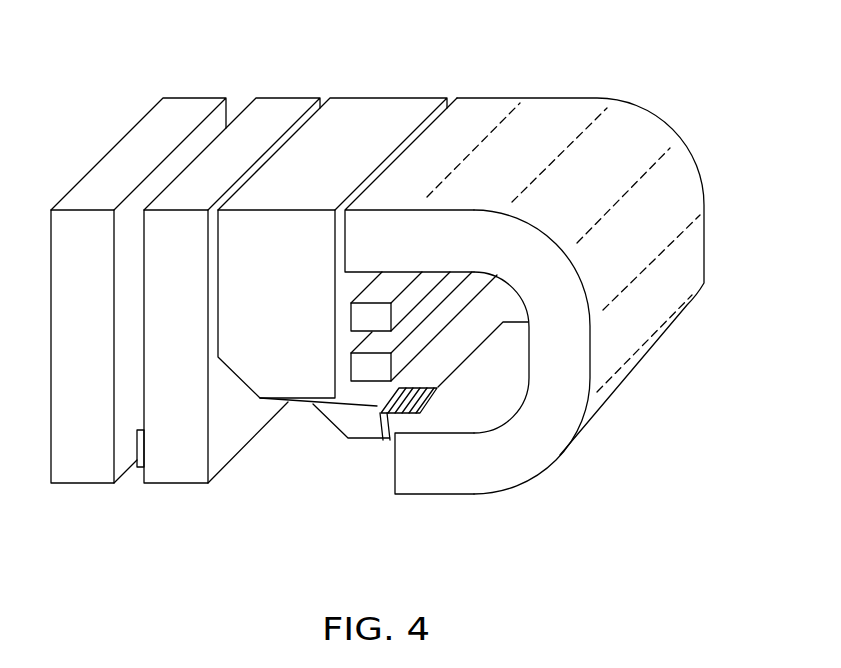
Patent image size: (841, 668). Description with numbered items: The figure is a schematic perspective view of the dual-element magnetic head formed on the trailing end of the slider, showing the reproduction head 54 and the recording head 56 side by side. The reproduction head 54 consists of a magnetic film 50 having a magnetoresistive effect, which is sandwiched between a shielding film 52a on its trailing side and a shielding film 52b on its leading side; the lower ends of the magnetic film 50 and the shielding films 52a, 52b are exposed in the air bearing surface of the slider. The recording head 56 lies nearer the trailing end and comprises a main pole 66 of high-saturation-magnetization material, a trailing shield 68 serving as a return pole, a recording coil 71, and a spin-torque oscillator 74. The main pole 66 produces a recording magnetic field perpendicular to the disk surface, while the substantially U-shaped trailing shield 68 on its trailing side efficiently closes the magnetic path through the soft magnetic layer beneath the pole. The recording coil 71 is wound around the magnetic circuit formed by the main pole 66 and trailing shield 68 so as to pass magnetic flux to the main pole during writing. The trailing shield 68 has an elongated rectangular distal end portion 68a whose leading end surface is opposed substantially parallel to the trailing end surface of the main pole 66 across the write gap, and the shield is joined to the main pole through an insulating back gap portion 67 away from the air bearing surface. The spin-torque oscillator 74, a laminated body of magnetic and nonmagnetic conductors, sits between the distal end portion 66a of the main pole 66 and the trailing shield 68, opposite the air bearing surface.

The magnetic film 50 is at (136, 445).
The shielding film 52a is at (173, 484).
The shielding film 52b is at (73, 484).
The reproduction head 54 is at (240, 93).
The recording head 56 is at (333, 452).
The main pole 66 is at (380, 104).
The distal end portion 66a is at (354, 439).
The back gap portion 67 is at (450, 105).
The trailing shield 68 is at (503, 105).
The distal end portion 68a is at (426, 495).
The recording coil 71 is at (435, 320).
The spin-torque oscillator 74 is at (426, 394).